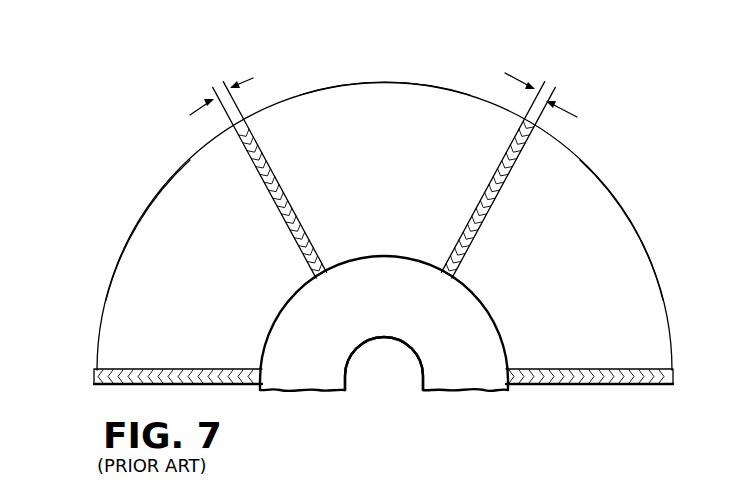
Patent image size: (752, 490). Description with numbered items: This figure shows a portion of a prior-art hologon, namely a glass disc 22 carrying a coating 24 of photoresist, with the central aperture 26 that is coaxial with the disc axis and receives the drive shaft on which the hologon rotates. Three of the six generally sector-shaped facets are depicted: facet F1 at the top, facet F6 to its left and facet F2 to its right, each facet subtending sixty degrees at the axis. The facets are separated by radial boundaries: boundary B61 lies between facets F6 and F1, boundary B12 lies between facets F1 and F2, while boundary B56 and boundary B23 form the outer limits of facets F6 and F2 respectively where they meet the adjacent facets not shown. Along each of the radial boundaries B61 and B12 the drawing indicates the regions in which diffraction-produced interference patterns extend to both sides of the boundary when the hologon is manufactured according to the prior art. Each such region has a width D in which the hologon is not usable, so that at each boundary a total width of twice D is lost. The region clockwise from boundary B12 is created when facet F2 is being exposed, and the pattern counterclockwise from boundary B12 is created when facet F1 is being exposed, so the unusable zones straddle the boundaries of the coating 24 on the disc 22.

The coating 24 is at (617, 233).
The glass disc 22 is at (447, 353).
The aperture 26 is at (353, 360).
The width of diffraction-effect region D is at (212, 86).
The facet F1 is at (374, 97).
The facet F6 is at (147, 230).
The facet F2 is at (643, 315).
The radial boundary B61 is at (235, 124).
The radial boundary B12 is at (531, 124).
The radial boundary B56 is at (97, 358).
The radial boundary B23 is at (673, 363).